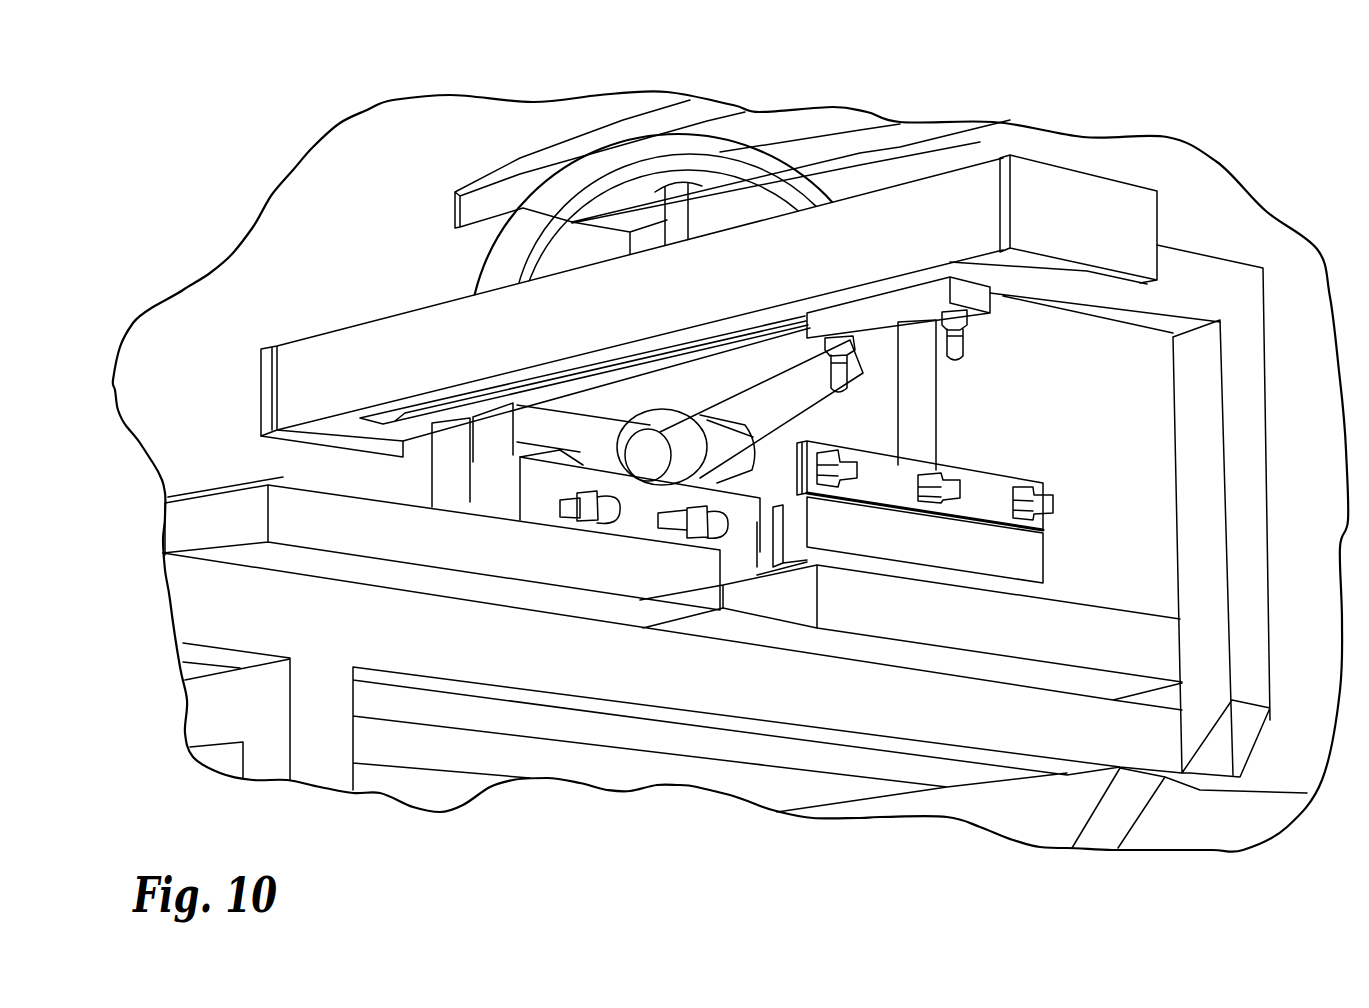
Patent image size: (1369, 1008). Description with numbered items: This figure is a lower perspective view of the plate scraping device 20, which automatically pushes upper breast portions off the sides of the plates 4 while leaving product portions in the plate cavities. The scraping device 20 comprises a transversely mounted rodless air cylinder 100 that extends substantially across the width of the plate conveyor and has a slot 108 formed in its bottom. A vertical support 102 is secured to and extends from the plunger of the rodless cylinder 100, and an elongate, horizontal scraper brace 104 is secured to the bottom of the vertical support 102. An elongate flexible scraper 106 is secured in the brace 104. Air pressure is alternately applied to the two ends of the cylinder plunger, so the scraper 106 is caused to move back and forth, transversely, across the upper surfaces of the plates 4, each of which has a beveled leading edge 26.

The plate 4 is at (481, 548).
The plate scraping device 20 is at (423, 293).
The beveled leading edge 26 is at (205, 495).
The rodless air cylinder 100 is at (1097, 202).
The vertical support 102 is at (923, 407).
The scraper brace 104 is at (983, 484).
The flexible scraper 106 is at (1023, 556).
The slot 108 is at (405, 421).